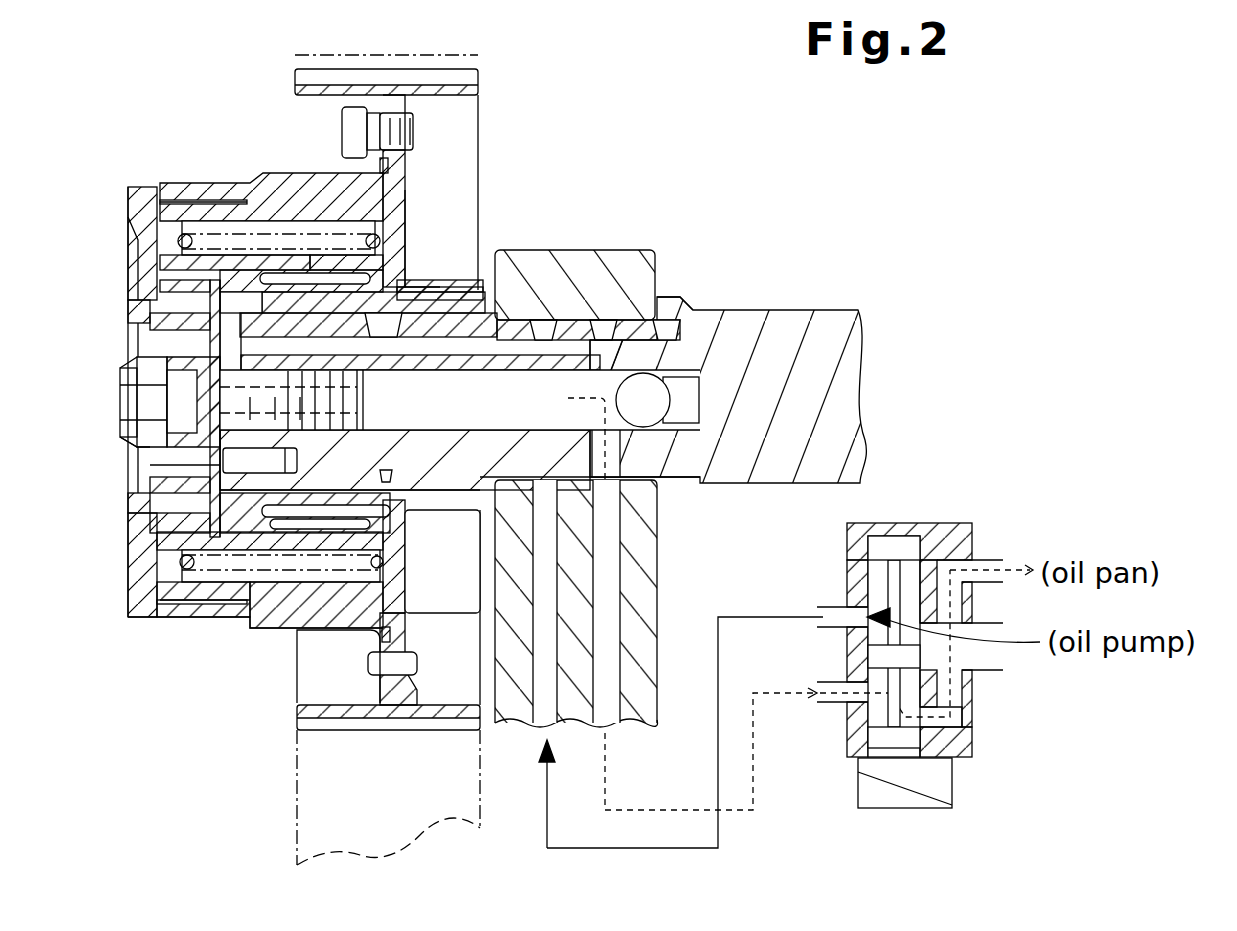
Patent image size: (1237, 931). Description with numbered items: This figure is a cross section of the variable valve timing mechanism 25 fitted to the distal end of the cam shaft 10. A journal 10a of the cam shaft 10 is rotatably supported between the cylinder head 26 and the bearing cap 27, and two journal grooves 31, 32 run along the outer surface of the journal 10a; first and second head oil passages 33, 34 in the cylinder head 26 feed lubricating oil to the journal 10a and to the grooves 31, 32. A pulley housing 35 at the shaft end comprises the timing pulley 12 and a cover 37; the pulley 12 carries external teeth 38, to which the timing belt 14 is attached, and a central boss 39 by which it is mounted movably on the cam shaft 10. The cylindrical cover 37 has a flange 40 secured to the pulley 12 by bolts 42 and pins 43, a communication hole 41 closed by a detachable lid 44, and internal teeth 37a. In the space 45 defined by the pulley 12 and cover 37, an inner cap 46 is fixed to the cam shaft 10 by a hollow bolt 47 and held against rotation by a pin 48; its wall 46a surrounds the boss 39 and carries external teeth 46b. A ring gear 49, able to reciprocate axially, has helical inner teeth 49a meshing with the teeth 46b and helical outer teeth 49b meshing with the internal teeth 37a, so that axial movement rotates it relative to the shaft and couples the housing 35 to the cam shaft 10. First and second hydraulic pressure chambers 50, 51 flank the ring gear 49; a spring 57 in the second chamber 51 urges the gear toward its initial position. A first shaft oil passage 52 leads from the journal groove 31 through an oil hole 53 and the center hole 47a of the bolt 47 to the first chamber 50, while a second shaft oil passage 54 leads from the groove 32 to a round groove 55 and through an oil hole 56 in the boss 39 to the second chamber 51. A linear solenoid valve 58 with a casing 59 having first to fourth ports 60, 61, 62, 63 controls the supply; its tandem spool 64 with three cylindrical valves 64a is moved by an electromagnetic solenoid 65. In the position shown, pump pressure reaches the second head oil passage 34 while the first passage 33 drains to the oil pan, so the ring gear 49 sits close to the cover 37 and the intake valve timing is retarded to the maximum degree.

The cam shaft 10 is at (745, 310).
The journal 10a is at (677, 310).
The timing pulley 12 is at (405, 163).
The timing belt 14 is at (297, 822).
The variable valve timing mechanism 25 is at (118, 177).
The cylinder head 26 is at (658, 596).
The bearing cap 27 is at (603, 250).
The journal groove 31 is at (626, 356).
The journal groove 32 is at (537, 463).
The first head oil passage 33 is at (627, 730).
The second head oil passage 34 is at (533, 727).
The pulley housing 35 is at (210, 183).
The cover 37 is at (128, 203).
The internal teeth 37a is at (250, 630).
The external teeth 38 is at (478, 76).
The boss 39 is at (437, 270).
The flange 40 is at (372, 647).
The communication hole 41 is at (140, 323).
The bolts 42 is at (350, 136).
The pins 43 is at (362, 665).
The detachable lid 44 is at (133, 450).
The space 45 is at (380, 587).
The inner cap 46 is at (227, 508).
The wall 46a is at (387, 520).
The external teeth 46b is at (390, 547).
The hollow bolt 47 is at (175, 362).
The center hole 47a is at (367, 408).
The pin 48 is at (150, 467).
The ring gear 49 is at (147, 250).
The inner teeth 49a is at (313, 543).
The outer teeth 49b is at (187, 600).
The first hydraulic pressure chamber 50 is at (152, 200).
The second hydraulic pressure chamber 51 is at (367, 200).
The first shaft oil passage 52 is at (467, 420).
The oil hole 53 is at (617, 443).
The second shaft oil passage 54 is at (490, 347).
The round groove 55 is at (393, 462).
The oil hole 56 is at (291, 459).
The spring 57 is at (383, 239).
The linear solenoid valve 58 is at (985, 711).
The casing 59 is at (970, 753).
The first port 60 is at (847, 700).
The second port 61 is at (847, 612).
The third port 62 is at (977, 560).
The fourth port 63 is at (970, 668).
The tandem type spool 64 is at (907, 567).
The cylindrical valves 64a is at (913, 558).
The electromagnetic solenoid 65 is at (902, 808).